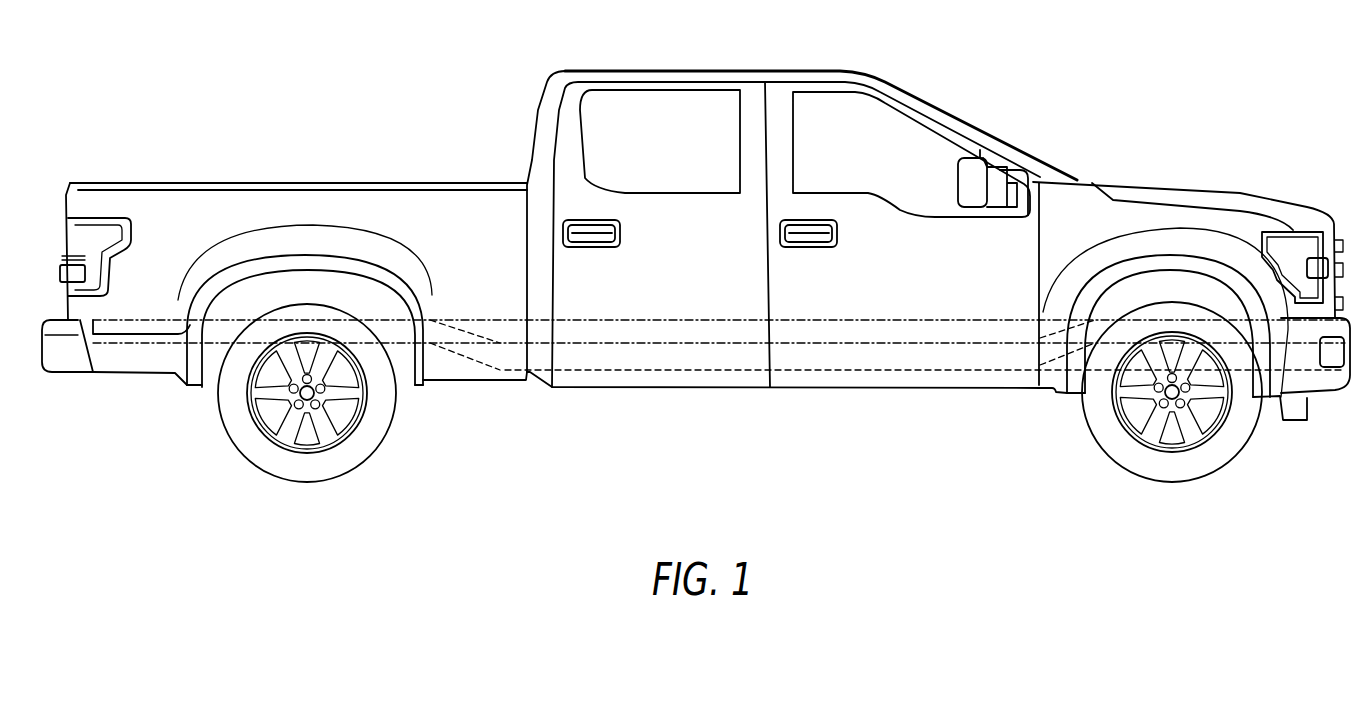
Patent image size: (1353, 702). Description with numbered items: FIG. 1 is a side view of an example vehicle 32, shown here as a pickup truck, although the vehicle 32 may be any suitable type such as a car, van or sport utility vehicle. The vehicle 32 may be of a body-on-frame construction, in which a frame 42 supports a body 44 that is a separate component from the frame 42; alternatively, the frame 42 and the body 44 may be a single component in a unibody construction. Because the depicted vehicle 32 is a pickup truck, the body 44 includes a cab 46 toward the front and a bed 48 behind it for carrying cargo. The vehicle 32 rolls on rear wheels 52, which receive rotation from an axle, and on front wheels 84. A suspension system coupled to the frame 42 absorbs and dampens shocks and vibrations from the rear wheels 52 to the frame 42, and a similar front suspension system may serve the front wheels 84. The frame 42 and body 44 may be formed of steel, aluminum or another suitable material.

The vehicle 32 is at (1132, 68).
The frame 42 is at (930, 370).
The body 44 is at (832, 387).
The cab 46 is at (618, 71).
The bed 48 is at (370, 183).
The rear wheels 52 is at (335, 448).
The front wheels 84 is at (1145, 447).